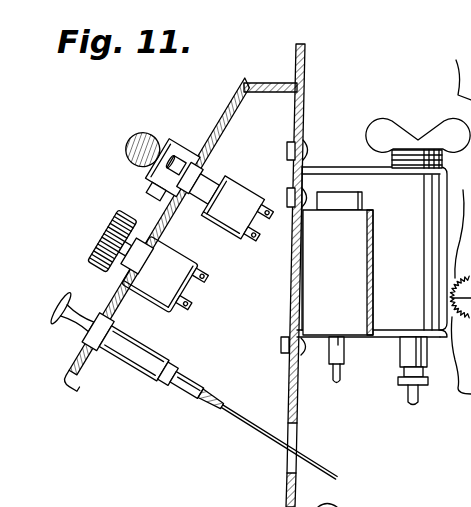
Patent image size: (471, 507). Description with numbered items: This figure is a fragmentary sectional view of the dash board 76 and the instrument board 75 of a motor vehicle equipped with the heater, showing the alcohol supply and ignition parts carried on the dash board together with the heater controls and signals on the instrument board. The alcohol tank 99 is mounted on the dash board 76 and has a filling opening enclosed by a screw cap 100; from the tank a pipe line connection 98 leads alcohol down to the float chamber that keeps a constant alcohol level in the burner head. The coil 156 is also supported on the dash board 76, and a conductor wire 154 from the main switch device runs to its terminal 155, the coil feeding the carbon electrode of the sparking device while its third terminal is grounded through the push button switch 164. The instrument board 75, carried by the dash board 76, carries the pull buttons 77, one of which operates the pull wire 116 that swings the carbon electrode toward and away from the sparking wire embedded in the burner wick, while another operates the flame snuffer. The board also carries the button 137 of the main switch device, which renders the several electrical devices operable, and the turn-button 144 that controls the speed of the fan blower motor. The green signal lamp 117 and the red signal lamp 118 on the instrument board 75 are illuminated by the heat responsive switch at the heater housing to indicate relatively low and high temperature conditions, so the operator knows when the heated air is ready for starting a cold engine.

The instrument board 75 is at (228, 121).
The dash board 76 is at (307, 100).
The pull buttons 77 is at (66, 326).
The pipe line connection 98 is at (400, 400).
The alcohol tank 99 is at (368, 193).
The screw cap 100 is at (396, 133).
The pull wire 116 is at (250, 426).
The green signal lamp 117 is at (128, 145).
The red signal lamp 118 is at (458, 503).
The button 137 is at (150, 181).
The turn-button 144 is at (90, 247).
The conductor wire 154 is at (338, 378).
The terminal 155 is at (323, 368).
The coil 156 is at (348, 314).
The push button switch 164 is at (170, 164).